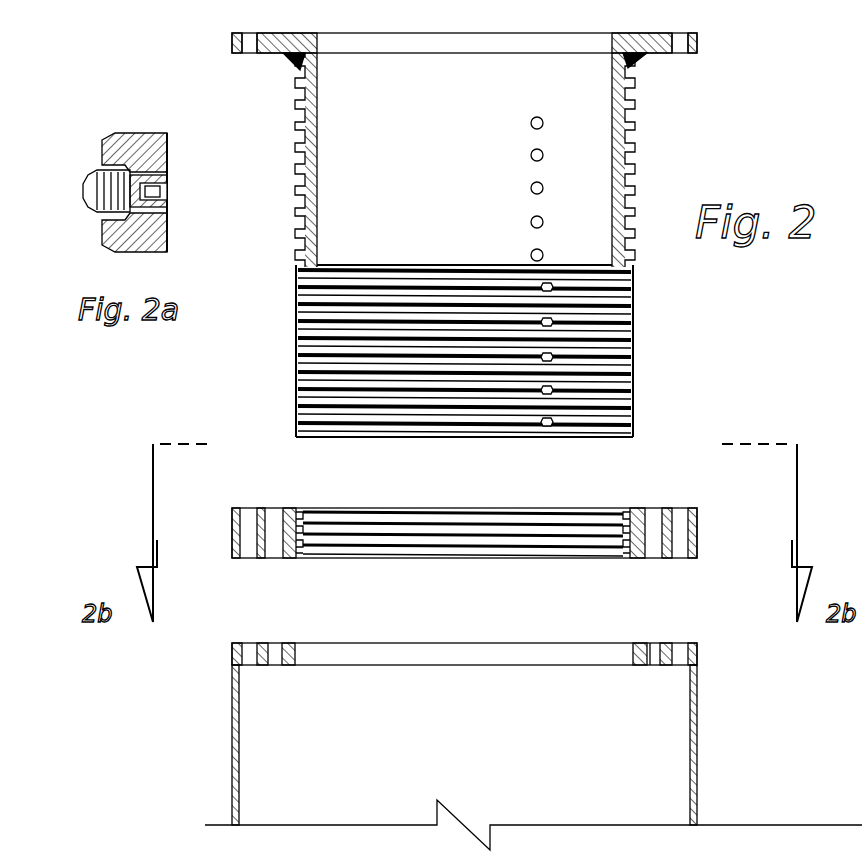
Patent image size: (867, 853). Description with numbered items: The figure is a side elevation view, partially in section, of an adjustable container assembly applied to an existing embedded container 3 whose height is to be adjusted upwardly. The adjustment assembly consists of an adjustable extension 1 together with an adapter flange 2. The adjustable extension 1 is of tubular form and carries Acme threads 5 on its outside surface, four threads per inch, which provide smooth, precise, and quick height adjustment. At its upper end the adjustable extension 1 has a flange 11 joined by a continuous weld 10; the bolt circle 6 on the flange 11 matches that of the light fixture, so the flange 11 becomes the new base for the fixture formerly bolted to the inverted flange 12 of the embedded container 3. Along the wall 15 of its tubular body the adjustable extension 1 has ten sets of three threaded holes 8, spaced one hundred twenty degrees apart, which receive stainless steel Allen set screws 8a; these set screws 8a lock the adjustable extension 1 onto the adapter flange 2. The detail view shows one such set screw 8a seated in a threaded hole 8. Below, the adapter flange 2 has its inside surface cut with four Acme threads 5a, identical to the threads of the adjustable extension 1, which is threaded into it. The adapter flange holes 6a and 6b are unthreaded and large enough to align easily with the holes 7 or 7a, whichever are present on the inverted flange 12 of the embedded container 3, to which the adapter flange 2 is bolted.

In FIG. 2, the adjustable extension 1 is at (472, 220).
In FIG. 2, the adapter flange 2 is at (487, 536).
In FIG. 2, the existing container 3 is at (533, 725).
In FIG. 2, the Acme threads 5 is at (637, 400).
In FIG. 2, the Acme threads 5a is at (300, 512).
In FIG. 2, the bolt circle 6 is at (245, 56).
In FIG. 2, the adapter flange holes 6a is at (272, 508).
In FIG. 2, the adapter flange holes 6b is at (676, 508).
In FIG. 2, the holes 7 is at (275, 643).
In FIG. 2, the holes 7a is at (680, 643).
In FIG. 2, the threaded holes 8 is at (317, 157).
In FIG. 2A, the Allen set screws 8a is at (290, 155).
In FIG. 2, the weld 10 is at (640, 60).
In FIG. 2, the flange 11 is at (278, 33).
In FIG. 2, the inverted flange 12 is at (640, 643).
In FIG. 2, the wall 15 is at (295, 208).